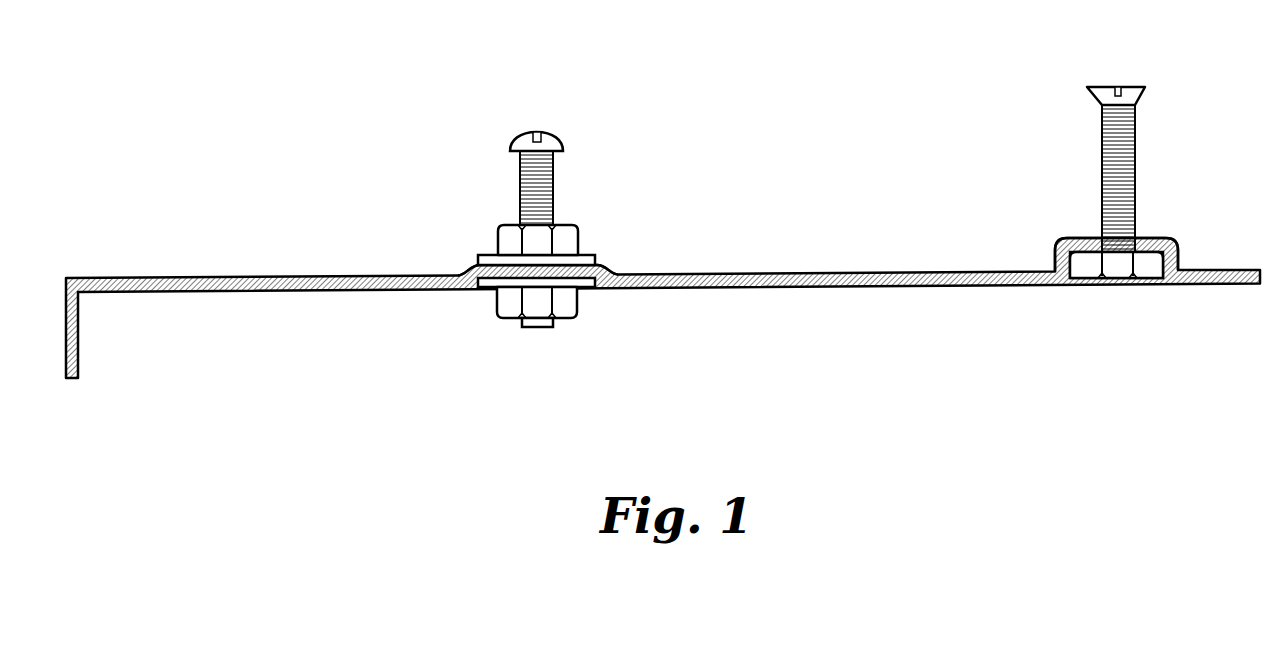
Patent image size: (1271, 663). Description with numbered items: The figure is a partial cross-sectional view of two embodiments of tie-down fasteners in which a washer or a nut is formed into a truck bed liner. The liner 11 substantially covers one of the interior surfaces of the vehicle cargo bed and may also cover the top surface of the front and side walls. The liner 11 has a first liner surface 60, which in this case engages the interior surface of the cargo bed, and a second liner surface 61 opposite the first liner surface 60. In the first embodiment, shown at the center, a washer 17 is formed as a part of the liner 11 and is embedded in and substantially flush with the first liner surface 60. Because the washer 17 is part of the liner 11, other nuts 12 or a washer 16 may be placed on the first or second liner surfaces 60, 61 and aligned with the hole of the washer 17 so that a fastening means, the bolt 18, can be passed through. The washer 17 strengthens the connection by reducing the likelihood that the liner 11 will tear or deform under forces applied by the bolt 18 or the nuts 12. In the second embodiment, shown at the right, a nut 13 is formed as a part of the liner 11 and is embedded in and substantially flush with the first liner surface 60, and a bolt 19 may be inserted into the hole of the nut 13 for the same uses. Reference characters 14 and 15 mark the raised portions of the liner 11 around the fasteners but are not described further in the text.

The liner 11 is at (663, 280).
The nuts 12 is at (575, 226).
The nut 13 is at (1122, 265).
The raised boss portion of plate 14 is at (452, 262).
The cap / raised housing 15 is at (1060, 245).
The washer 16 is at (597, 254).
The washer 17 is at (490, 290).
The bolt 18 is at (527, 133).
The bolt 19 is at (1137, 214).
The first liner surface 60 is at (663, 280).
The second liner surface 61 is at (243, 277).